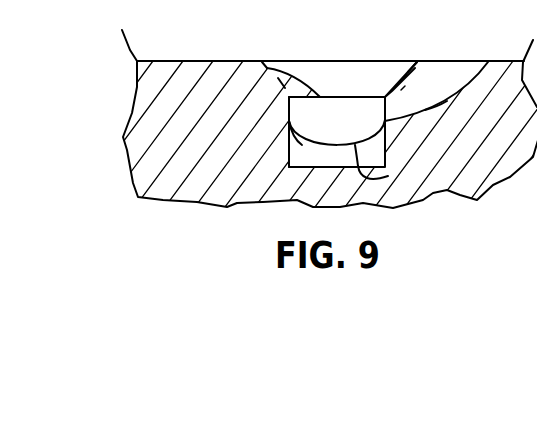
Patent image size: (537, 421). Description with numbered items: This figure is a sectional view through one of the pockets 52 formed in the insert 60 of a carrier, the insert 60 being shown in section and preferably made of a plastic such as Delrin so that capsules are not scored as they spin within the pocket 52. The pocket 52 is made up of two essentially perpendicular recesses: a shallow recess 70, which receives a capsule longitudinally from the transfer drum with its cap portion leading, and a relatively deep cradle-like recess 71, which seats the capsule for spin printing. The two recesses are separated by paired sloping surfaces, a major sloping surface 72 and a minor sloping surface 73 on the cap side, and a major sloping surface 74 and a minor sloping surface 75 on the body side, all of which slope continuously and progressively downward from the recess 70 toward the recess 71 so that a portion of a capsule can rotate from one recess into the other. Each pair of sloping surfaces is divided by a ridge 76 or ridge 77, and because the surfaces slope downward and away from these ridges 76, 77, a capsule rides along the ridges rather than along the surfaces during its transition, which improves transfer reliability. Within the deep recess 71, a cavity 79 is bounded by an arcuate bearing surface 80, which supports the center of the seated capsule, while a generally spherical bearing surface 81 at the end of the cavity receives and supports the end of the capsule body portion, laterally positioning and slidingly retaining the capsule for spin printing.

The pocket 52 is at (317, 55).
The insert 60 is at (173, 133).
The recess 70 is at (442, 80).
The recess 71 is at (281, 151).
The major sloping surface 72 is at (431, 106).
The minor sloping surface 73 is at (392, 76).
The major sloping surface 74 is at (267, 68).
The minor sloping surface 75 is at (283, 87).
The ridge 76 is at (417, 62).
The ridge 77 is at (290, 73).
The cavity 79 is at (345, 127).
The arcuate bearing surface 80 is at (384, 162).
The spherical bearing surface 81 is at (300, 115).